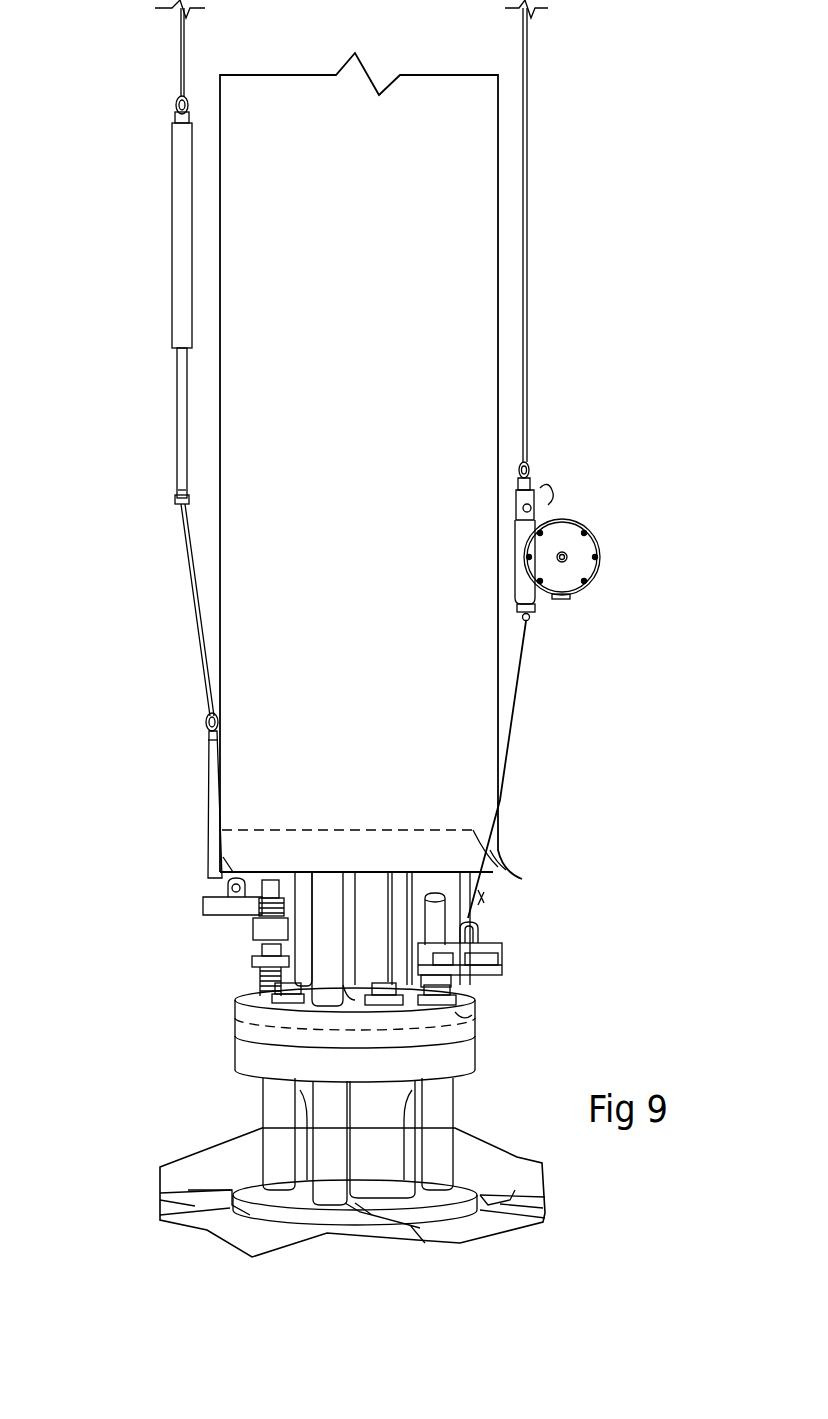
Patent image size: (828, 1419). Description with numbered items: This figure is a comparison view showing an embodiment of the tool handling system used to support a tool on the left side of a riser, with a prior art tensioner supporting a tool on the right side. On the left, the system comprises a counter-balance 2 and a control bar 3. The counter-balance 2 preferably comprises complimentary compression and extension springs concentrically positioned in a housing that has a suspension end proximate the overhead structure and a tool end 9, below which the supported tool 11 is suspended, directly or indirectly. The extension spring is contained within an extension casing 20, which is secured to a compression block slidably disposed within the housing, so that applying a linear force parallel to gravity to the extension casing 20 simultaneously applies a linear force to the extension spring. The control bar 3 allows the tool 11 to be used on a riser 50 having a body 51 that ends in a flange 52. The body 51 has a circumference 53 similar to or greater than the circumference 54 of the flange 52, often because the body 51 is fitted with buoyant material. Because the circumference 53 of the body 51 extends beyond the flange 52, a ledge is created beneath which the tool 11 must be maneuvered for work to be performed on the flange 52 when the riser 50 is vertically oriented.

The counter-balance 2 is at (186, 240).
The tool end 9 is at (178, 351).
The extension casing 20 is at (182, 466).
The control bar 3 is at (214, 838).
The tool 11 is at (240, 914).
The riser 50 is at (380, 785).
The body 51 is at (478, 773).
The flange 52 is at (258, 1064).
The circumference 53 is at (486, 857).
The circumference 54 is at (460, 1022).